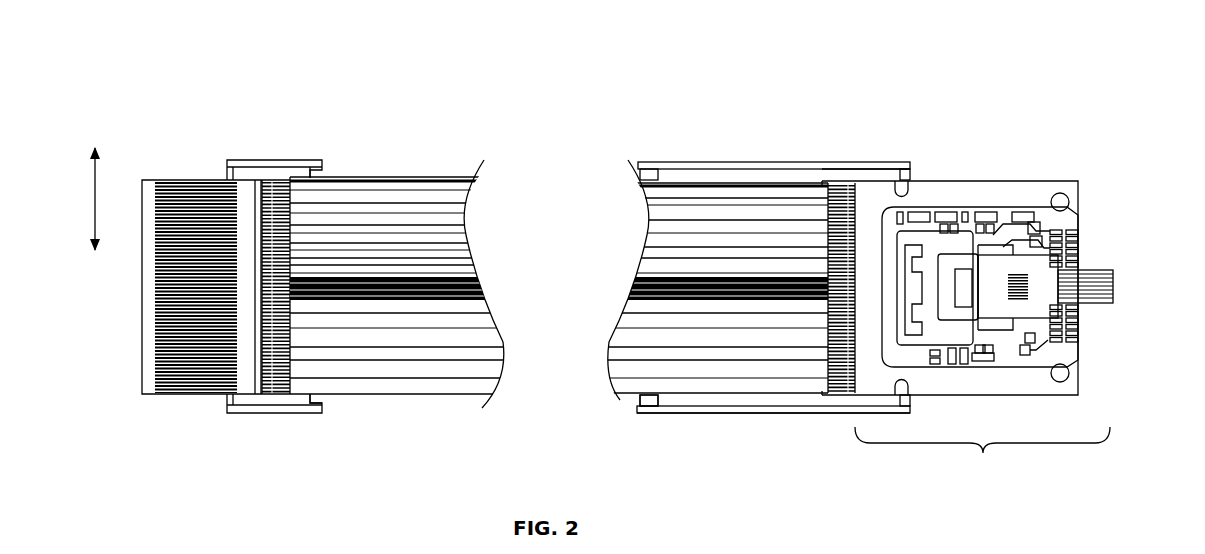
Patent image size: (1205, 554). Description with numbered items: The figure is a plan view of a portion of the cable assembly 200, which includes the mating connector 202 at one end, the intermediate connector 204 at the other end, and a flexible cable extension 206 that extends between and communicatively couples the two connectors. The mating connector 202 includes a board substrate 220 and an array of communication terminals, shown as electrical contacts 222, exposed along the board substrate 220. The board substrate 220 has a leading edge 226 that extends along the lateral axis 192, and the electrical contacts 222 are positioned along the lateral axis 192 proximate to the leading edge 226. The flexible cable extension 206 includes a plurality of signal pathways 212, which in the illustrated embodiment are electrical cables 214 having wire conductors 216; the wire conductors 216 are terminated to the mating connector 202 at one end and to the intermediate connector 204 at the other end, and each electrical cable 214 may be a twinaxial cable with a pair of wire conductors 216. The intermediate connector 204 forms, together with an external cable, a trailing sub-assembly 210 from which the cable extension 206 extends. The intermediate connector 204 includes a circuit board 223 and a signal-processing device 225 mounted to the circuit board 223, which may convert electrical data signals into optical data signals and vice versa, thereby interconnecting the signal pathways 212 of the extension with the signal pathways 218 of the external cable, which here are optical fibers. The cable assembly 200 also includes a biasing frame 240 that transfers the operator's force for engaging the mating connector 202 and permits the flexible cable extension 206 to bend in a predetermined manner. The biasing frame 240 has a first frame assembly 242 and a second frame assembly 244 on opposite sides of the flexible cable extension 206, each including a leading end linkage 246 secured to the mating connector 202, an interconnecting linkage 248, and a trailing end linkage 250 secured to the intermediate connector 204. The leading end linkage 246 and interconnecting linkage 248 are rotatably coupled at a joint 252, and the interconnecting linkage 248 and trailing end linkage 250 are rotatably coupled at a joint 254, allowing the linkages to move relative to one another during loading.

The cable assembly 200 is at (988, 66).
The mating connector 202 is at (168, 138).
The lateral axis 192 is at (97, 197).
The leading edge 226 is at (142, 318).
The electrical contacts 222 is at (181, 203).
The board substrate 220 is at (244, 192).
The wire conductors 216 is at (283, 181).
The leading end linkage 246 is at (278, 160).
The joint 252 is at (325, 404).
The interconnecting linkage 248 is at (392, 176).
The electrical cables 214 is at (440, 192).
The flexible cable extension 206 is at (766, 142).
The signal pathways 212 is at (697, 186).
The trailing end linkage 250 is at (835, 160).
The biasing frame 240 is at (657, 142).
The first frame assembly 242 is at (880, 140).
The joint 254 is at (638, 398).
The second frame assembly 244 is at (807, 431).
The intermediate connector 204 is at (1030, 160).
The circuit board 223 is at (930, 181).
The signal-processing device 225 is at (964, 243).
The signal pathways 218 is at (1110, 268).
The trailing sub-assembly 210 is at (982, 455).